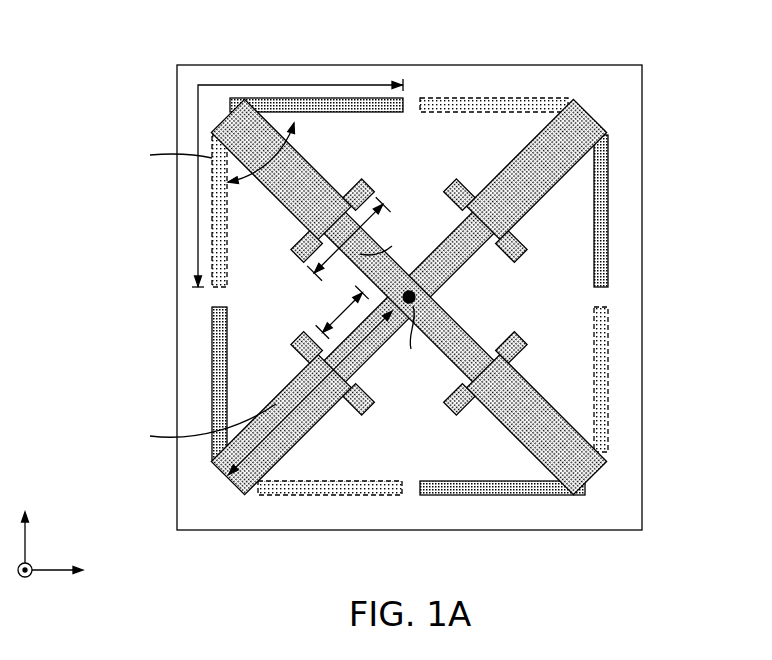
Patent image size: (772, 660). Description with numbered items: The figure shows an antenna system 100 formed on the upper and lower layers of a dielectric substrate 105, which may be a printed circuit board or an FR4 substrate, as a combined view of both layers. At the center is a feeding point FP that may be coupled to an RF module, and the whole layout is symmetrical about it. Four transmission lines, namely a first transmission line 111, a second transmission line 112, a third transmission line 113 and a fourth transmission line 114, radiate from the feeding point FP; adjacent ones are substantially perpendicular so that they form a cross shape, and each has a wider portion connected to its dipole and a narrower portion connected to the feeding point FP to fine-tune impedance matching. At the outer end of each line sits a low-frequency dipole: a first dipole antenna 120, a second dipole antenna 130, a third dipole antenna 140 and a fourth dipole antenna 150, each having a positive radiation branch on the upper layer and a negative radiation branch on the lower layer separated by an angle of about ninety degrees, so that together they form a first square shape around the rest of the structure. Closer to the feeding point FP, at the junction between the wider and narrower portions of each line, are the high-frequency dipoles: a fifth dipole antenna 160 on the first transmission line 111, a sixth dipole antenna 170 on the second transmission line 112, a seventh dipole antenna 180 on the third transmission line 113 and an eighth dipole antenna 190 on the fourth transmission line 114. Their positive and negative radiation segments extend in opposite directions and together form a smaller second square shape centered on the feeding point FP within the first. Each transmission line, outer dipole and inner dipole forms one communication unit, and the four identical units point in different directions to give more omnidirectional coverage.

The antenna system 100 is at (72, 56).
The dielectric substrate 105 is at (643, 79).
The first transmission line 111 is at (240, 121).
The second transmission line 112 is at (591, 109).
The third transmission line 113 is at (449, 322).
The fourth transmission line 114 is at (213, 462).
The first dipole antenna 120 is at (325, 99).
The second dipole antenna 130 is at (497, 99).
The third dipole antenna 140 is at (496, 497).
The fourth dipole antenna 150 is at (213, 383).
The fifth dipole antenna 160 is at (366, 186).
The sixth dipole antenna 170 is at (470, 186).
The seventh dipole antenna 180 is at (516, 354).
The eighth dipole antenna 190 is at (296, 340).